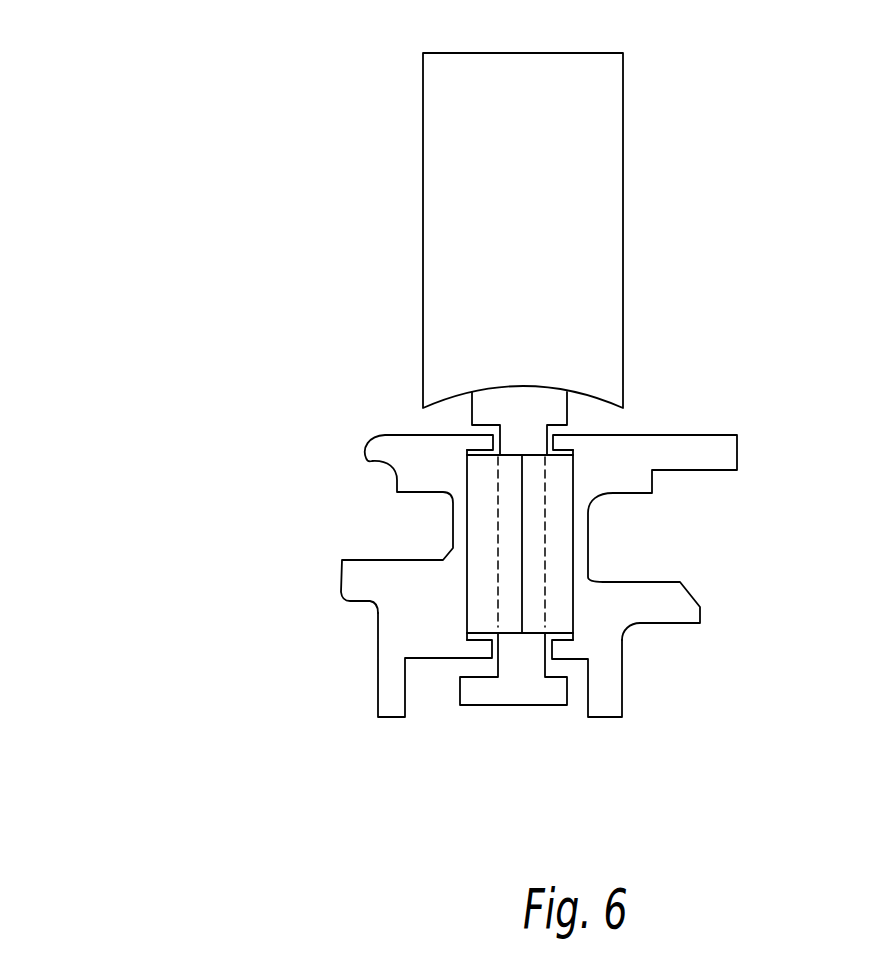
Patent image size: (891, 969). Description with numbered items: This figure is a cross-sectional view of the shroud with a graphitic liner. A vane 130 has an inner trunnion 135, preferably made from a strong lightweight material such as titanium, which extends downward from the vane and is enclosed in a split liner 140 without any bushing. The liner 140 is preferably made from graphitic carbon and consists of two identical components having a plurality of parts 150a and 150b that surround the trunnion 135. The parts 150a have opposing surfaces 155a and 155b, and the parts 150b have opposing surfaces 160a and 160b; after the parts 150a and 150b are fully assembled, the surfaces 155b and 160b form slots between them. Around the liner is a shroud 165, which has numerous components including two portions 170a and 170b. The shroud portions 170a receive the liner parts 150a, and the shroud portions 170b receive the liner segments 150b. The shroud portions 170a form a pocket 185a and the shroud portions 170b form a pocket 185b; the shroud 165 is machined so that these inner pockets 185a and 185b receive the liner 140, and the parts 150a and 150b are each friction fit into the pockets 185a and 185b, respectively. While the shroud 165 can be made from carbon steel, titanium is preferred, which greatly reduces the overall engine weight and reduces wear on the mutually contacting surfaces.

The vane 130 is at (610, 192).
The inner trunnion 135 is at (558, 417).
The liner 140 is at (490, 473).
The liner parts 150a is at (483, 592).
The liner parts 150b is at (545, 608).
The surface 155a is at (463, 533).
The surface 155b is at (497, 510).
The surface 160a is at (573, 540).
The surface 160b is at (545, 568).
The shroud 165 is at (618, 700).
The shroud portions 170a is at (355, 571).
The shroud portions 170b is at (710, 450).
The pocket 185a is at (465, 631).
The pocket 185b is at (573, 638).